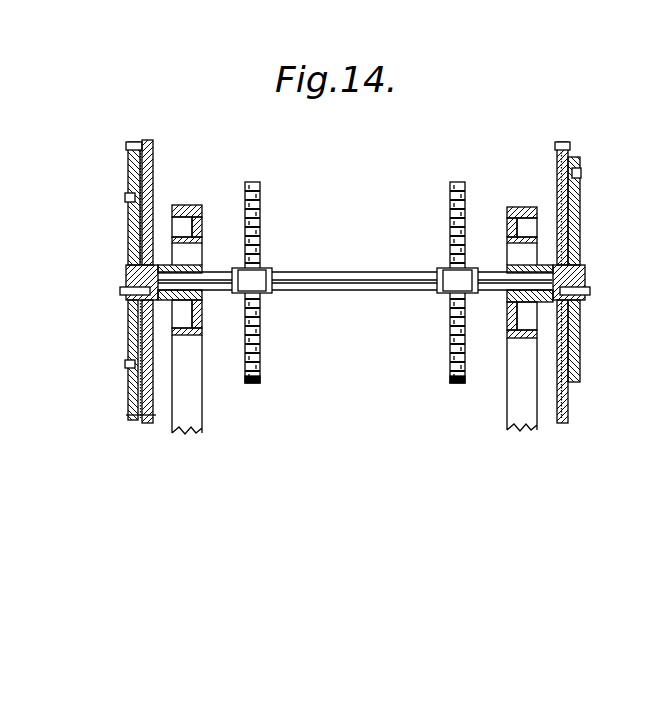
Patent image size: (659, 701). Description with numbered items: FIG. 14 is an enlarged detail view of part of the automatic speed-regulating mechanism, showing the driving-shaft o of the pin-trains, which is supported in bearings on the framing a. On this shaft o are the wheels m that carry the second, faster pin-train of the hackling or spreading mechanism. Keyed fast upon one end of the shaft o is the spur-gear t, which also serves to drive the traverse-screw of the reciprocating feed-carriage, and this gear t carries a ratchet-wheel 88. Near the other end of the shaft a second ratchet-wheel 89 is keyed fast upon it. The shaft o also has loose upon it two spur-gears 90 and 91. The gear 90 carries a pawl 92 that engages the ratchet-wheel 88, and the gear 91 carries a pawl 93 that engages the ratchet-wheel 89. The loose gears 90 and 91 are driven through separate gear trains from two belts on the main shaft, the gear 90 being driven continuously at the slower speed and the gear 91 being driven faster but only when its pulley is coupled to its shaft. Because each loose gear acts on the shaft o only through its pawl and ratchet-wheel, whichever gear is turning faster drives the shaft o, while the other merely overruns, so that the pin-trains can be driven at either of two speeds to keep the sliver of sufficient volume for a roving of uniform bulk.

The ratchet-wheel 88 is at (132, 238).
The ratchet-wheel 89 is at (581, 246).
The spur-gear 90 is at (155, 146).
The spur-gear 91 is at (548, 275).
The pawl 92 is at (130, 181).
The pawl 93 is at (581, 175).
The framing a is at (192, 412).
The wheel m is at (355, 282).
The driving-shaft o is at (355, 269).
The spur-gear t is at (124, 410).